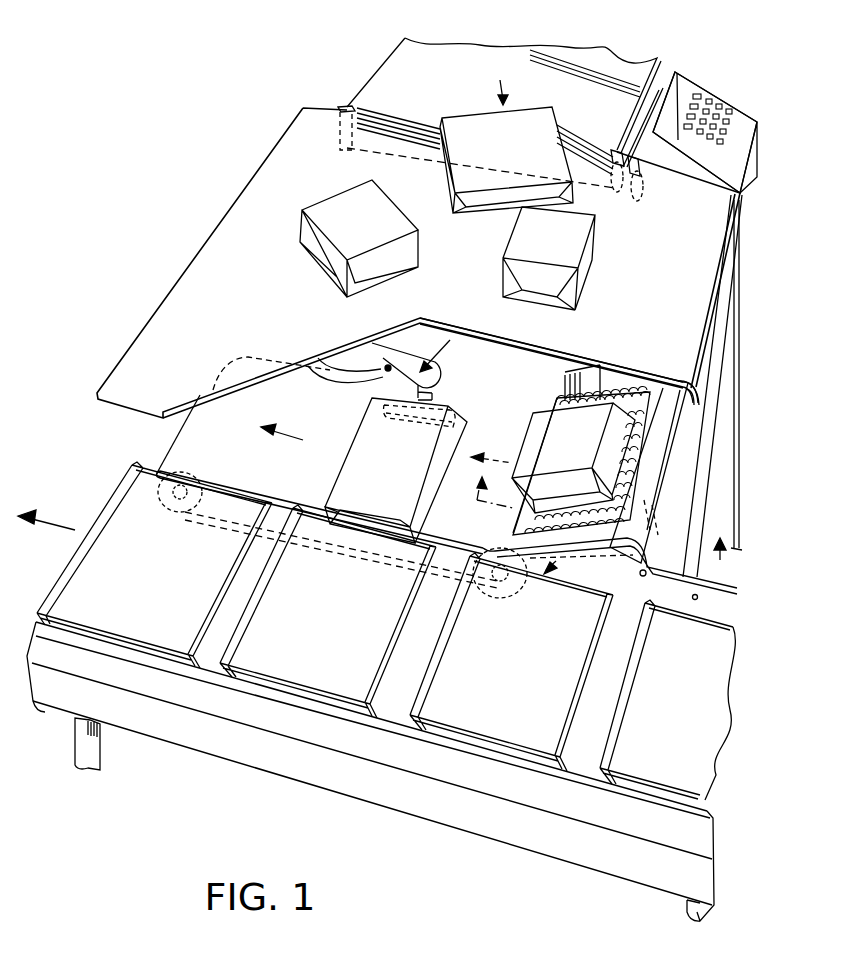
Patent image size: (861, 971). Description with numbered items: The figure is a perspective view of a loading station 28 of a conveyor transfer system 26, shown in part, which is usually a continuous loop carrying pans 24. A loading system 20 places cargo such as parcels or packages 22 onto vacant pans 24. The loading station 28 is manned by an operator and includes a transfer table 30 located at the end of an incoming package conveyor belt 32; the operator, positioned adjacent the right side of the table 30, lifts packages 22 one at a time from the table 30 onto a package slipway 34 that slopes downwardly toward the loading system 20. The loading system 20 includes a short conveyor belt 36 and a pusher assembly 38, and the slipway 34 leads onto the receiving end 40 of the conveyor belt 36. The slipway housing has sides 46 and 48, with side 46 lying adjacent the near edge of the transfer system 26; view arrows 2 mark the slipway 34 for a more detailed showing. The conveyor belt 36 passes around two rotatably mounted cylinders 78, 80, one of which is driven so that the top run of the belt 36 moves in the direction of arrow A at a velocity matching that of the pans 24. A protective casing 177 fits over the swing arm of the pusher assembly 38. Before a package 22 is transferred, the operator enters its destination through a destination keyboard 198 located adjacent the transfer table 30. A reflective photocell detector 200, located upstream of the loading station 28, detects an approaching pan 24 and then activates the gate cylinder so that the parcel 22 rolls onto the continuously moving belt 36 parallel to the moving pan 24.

The loading system 20 is at (113, 356).
The packages 22 is at (491, 160).
The pans 24 is at (144, 620).
The conveyor transfer system 26 is at (206, 777).
The loading station 28 is at (733, 77).
The transfer table 30 is at (629, 290).
The incoming package conveyor belt 32 is at (566, 52).
The package slipway 34 is at (668, 448).
The conveyor belt 36 is at (278, 475).
The pusher assembly 38 is at (458, 363).
The receiving end 40 is at (518, 427).
The side 46 is at (583, 548).
The side 48 is at (699, 386).
The cylinder 78 is at (484, 603).
The cylinder 80 is at (164, 472).
The protective casing 177 is at (418, 361).
The destination keyboard 198 is at (742, 137).
The reflective photocell detector 200 is at (698, 598).
The section line 2- 2 is at (592, 528).